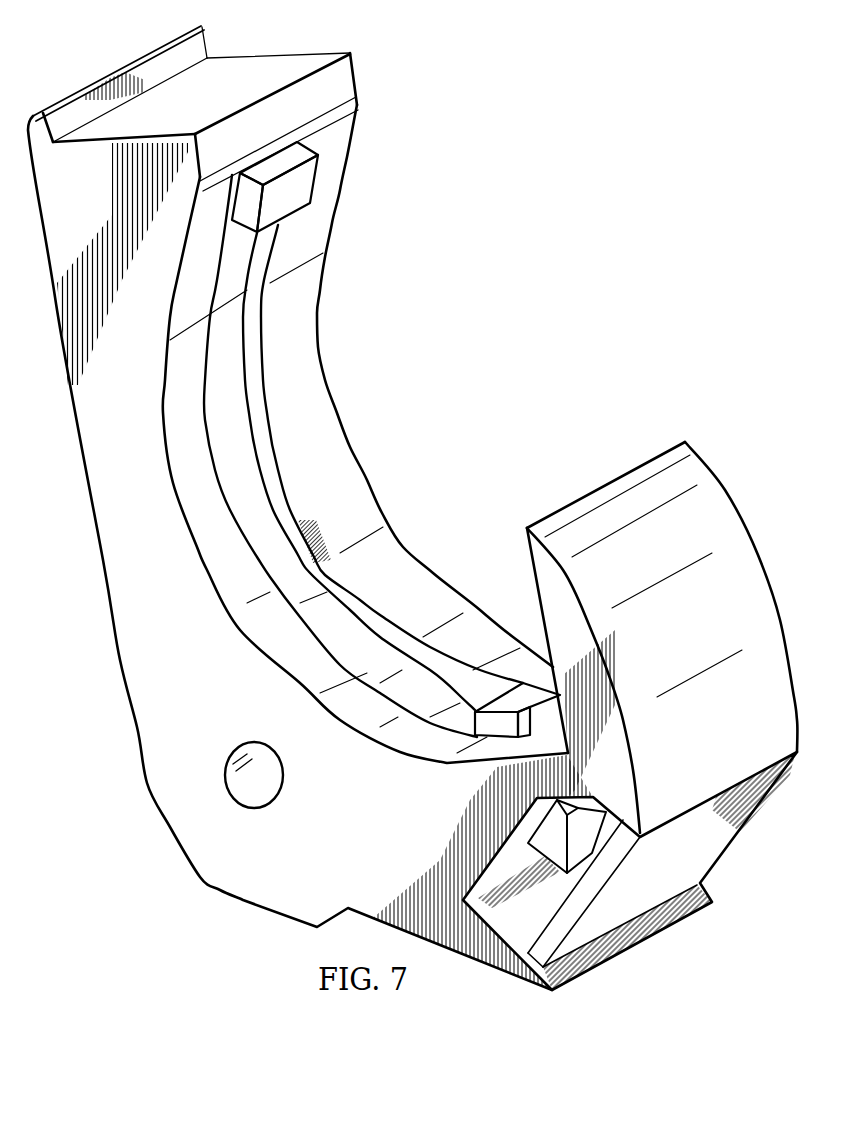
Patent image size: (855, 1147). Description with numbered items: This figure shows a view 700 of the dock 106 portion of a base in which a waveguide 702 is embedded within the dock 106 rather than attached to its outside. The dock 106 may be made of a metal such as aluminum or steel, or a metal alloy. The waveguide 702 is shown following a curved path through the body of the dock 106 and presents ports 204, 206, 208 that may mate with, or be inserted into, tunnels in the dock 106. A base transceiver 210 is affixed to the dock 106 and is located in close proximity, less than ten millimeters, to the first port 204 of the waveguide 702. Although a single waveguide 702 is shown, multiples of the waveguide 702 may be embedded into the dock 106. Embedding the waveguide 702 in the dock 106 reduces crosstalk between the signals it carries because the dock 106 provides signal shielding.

The mounting bracket assembly 700 is at (508, 86).
The dock 106 is at (155, 785).
The waveguide 702 is at (238, 440).
The port 208 is at (318, 177).
The port 206 is at (503, 692).
The first port 204 is at (583, 828).
The base transceiver 210 is at (715, 852).